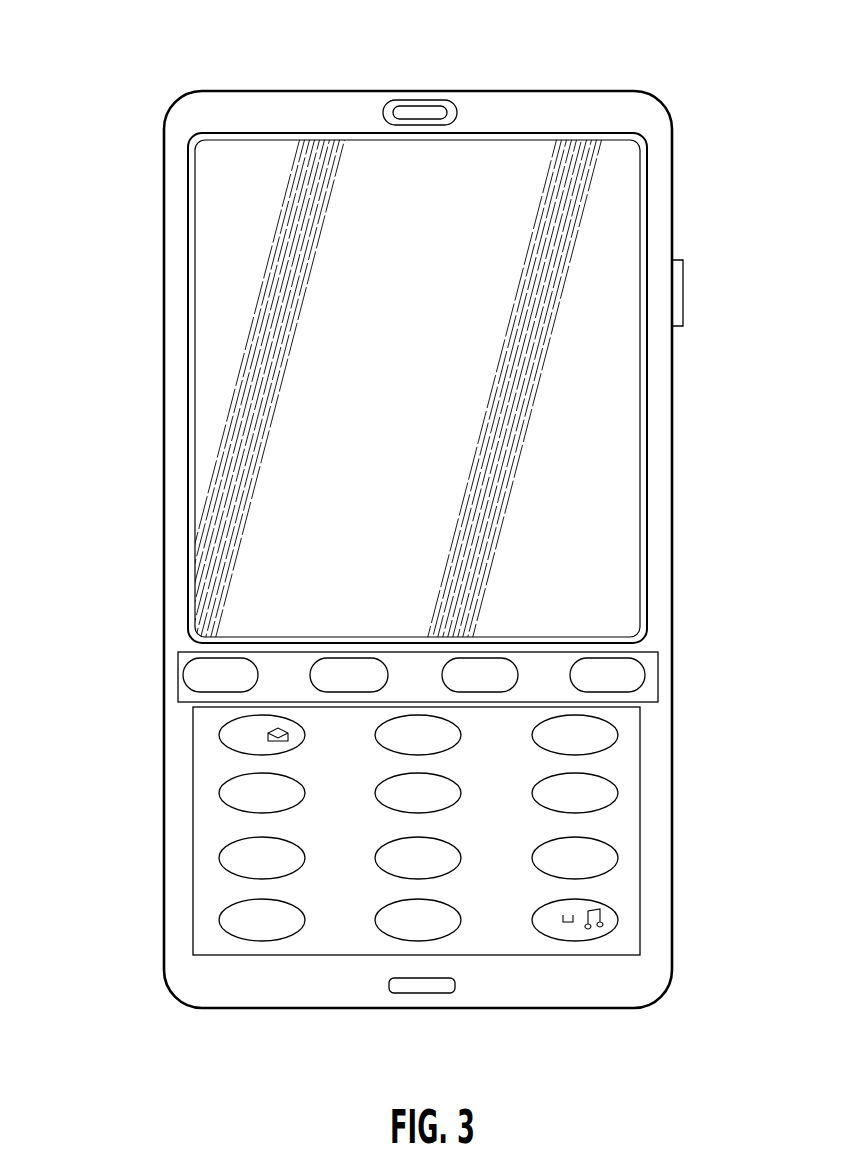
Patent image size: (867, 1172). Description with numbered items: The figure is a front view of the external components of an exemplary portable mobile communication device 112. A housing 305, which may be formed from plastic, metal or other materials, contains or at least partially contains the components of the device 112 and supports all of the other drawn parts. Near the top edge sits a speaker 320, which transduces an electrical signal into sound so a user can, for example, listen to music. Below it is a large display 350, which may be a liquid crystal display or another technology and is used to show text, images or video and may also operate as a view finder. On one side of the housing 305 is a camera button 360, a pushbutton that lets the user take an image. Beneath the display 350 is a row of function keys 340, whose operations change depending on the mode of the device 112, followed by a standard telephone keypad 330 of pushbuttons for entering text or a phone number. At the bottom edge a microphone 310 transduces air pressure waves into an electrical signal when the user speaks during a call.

The portable mobile communication device 112 is at (186, 60).
The housing 305 is at (164, 477).
The speaker 320 is at (427, 100).
The display 350 is at (627, 408).
The camera button 360 is at (678, 292).
The function keys 340 is at (687, 652).
The keypad 330 is at (687, 718).
The microphone 310 is at (436, 993).